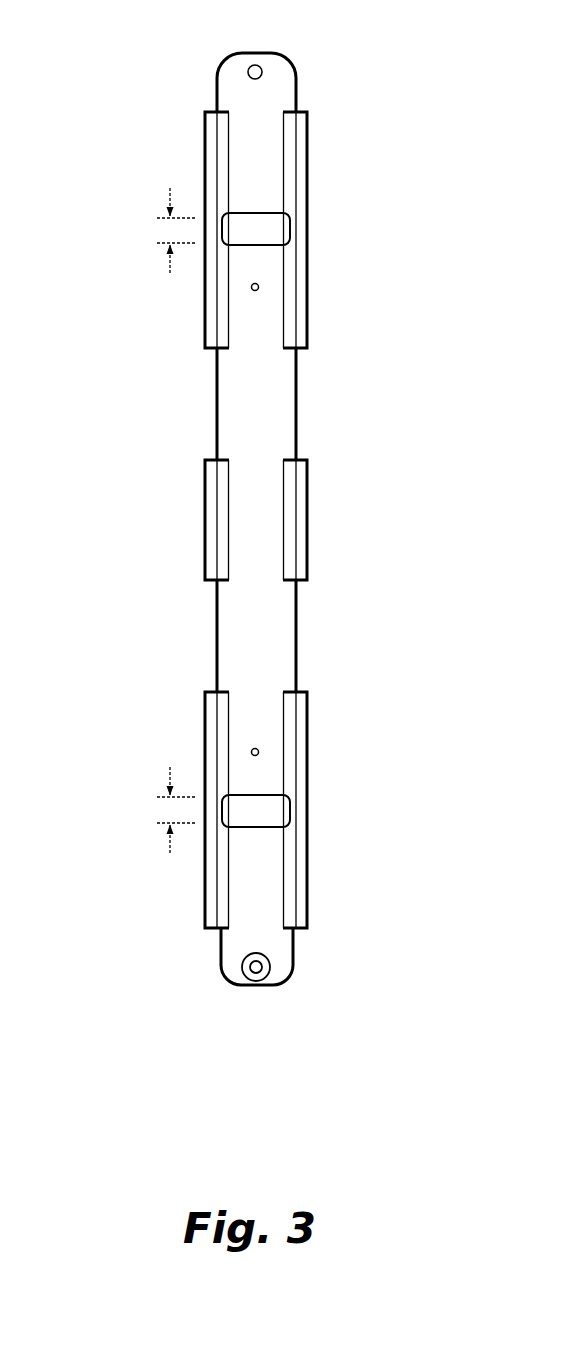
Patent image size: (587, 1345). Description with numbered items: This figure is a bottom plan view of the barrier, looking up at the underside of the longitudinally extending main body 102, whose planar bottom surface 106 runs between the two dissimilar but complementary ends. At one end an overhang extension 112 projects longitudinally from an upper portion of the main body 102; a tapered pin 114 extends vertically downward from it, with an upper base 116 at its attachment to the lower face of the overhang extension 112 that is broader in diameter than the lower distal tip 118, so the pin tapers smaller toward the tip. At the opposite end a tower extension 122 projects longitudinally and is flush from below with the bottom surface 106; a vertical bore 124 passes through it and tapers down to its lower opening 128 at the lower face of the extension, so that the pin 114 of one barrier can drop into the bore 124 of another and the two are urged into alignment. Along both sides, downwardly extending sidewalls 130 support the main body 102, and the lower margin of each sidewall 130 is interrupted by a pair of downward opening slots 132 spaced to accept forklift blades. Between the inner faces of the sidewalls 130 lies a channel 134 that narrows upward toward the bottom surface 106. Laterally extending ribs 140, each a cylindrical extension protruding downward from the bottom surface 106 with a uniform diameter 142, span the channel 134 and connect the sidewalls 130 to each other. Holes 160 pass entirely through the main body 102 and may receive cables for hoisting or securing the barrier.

The main body 102 is at (217, 418).
The bottom surface 106 is at (259, 171).
The overhang extension 112 is at (297, 940).
The tapered pin 114 is at (281, 954).
The upper base 116 is at (241, 967).
The lower distal tip 118 is at (250, 974).
The tower extension 122 is at (298, 102).
The vertical bore 124 is at (256, 65).
The lower opening 128 is at (248, 72).
The sidewalls 130 is at (308, 288).
The downward opening slots 132 is at (267, 397).
The channel 134 is at (263, 538).
The ribs 140 is at (280, 232).
The uniform diameter 142 is at (160, 227).
The holes 160 is at (265, 297).